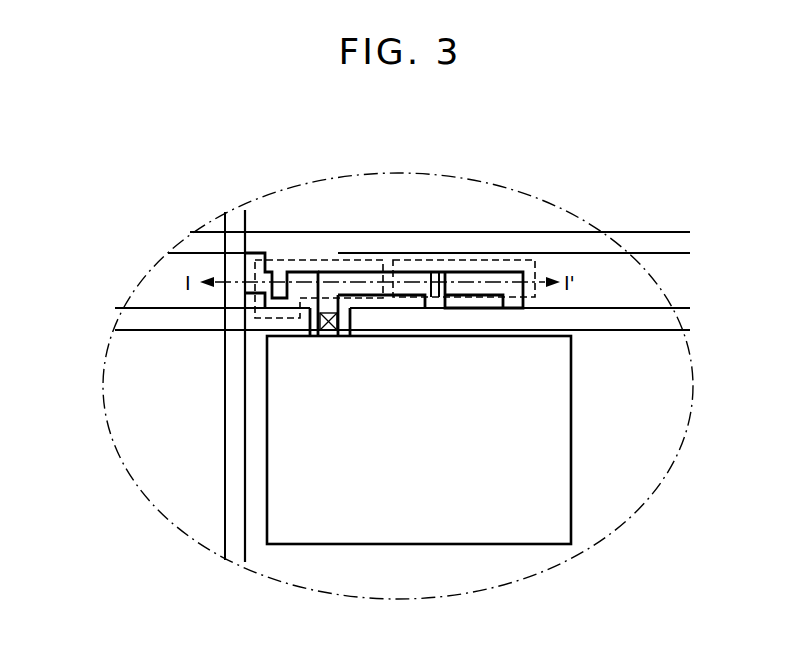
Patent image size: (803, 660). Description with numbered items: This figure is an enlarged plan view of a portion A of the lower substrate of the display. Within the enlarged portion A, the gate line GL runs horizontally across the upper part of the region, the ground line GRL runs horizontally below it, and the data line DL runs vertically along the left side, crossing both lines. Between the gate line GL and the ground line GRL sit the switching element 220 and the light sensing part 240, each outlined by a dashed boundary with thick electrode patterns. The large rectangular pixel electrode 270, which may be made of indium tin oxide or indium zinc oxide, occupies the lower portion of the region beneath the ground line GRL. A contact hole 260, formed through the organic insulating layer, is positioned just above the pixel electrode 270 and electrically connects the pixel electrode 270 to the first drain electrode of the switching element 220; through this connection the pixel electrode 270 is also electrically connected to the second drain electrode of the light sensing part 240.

The switching element 220 is at (336, 258).
The light sensing part 240 is at (456, 258).
The contact hole 260 is at (327, 333).
The pixel electrode 270 is at (566, 385).
The gate line GL is at (196, 241).
The ground line GRL is at (126, 320).
The data line DL is at (226, 413).
The portion A is at (556, 566).